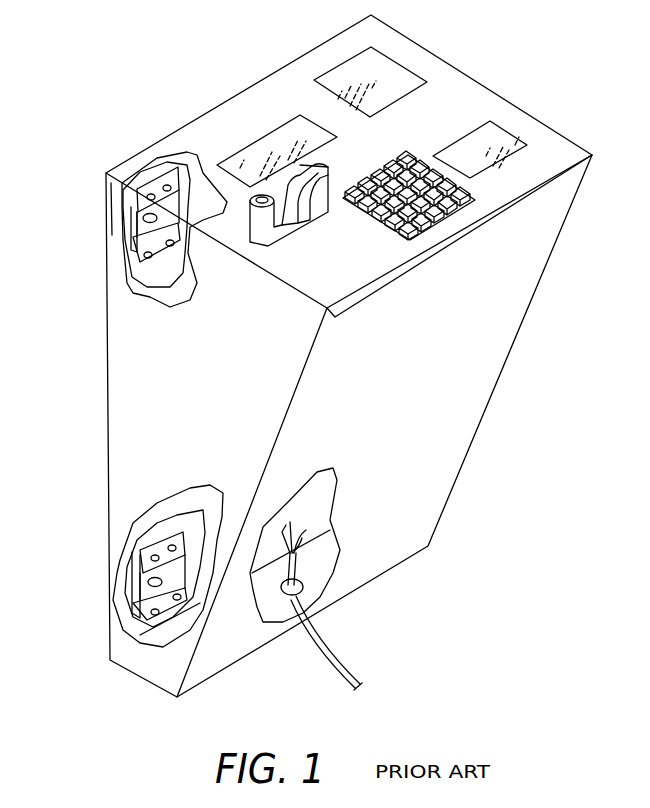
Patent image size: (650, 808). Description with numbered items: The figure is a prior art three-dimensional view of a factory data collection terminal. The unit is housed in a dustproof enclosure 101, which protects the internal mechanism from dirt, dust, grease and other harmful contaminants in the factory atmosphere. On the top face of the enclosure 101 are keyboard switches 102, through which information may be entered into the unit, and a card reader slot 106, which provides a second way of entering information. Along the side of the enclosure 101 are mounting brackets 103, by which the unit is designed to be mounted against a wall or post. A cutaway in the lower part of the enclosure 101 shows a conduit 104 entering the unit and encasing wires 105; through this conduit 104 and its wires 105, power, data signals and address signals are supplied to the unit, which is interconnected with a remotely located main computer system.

The dustproof enclosure 101 is at (276, 74).
The keyboard switches 102 is at (366, 205).
The mounting brackets 103 is at (140, 198).
The conduit 104 is at (331, 645).
The wires 105 is at (282, 537).
The card reader slot 106 is at (323, 164).